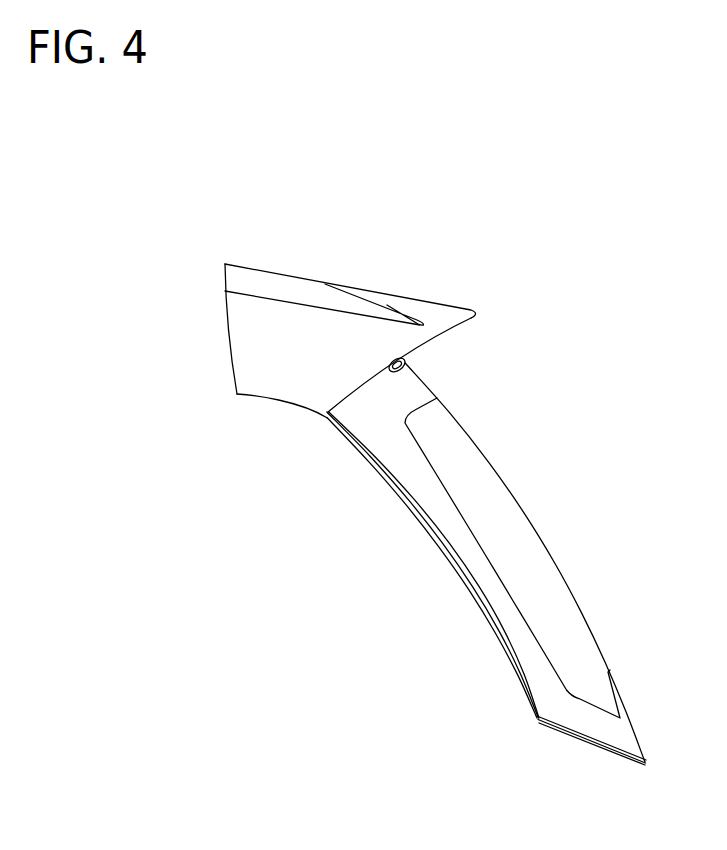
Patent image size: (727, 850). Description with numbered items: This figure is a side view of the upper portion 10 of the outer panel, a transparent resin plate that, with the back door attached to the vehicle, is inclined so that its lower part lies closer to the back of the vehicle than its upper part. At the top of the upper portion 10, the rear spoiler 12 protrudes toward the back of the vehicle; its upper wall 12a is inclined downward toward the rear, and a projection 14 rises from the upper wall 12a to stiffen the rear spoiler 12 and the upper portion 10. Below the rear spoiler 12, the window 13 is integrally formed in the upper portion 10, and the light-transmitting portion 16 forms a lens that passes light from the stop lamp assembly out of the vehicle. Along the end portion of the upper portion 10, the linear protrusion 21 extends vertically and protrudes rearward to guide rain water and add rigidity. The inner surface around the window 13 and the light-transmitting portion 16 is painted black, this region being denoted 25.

The upper portion 10 is at (455, 278).
The rear spoiler 12 is at (310, 328).
The upper wall 12a is at (367, 332).
The window 13 is at (482, 463).
The projection 14 is at (250, 264).
The light-transmitting portion 16 is at (404, 358).
The linear protrusion 21 is at (490, 607).
The black-painted region 25 is at (565, 710).